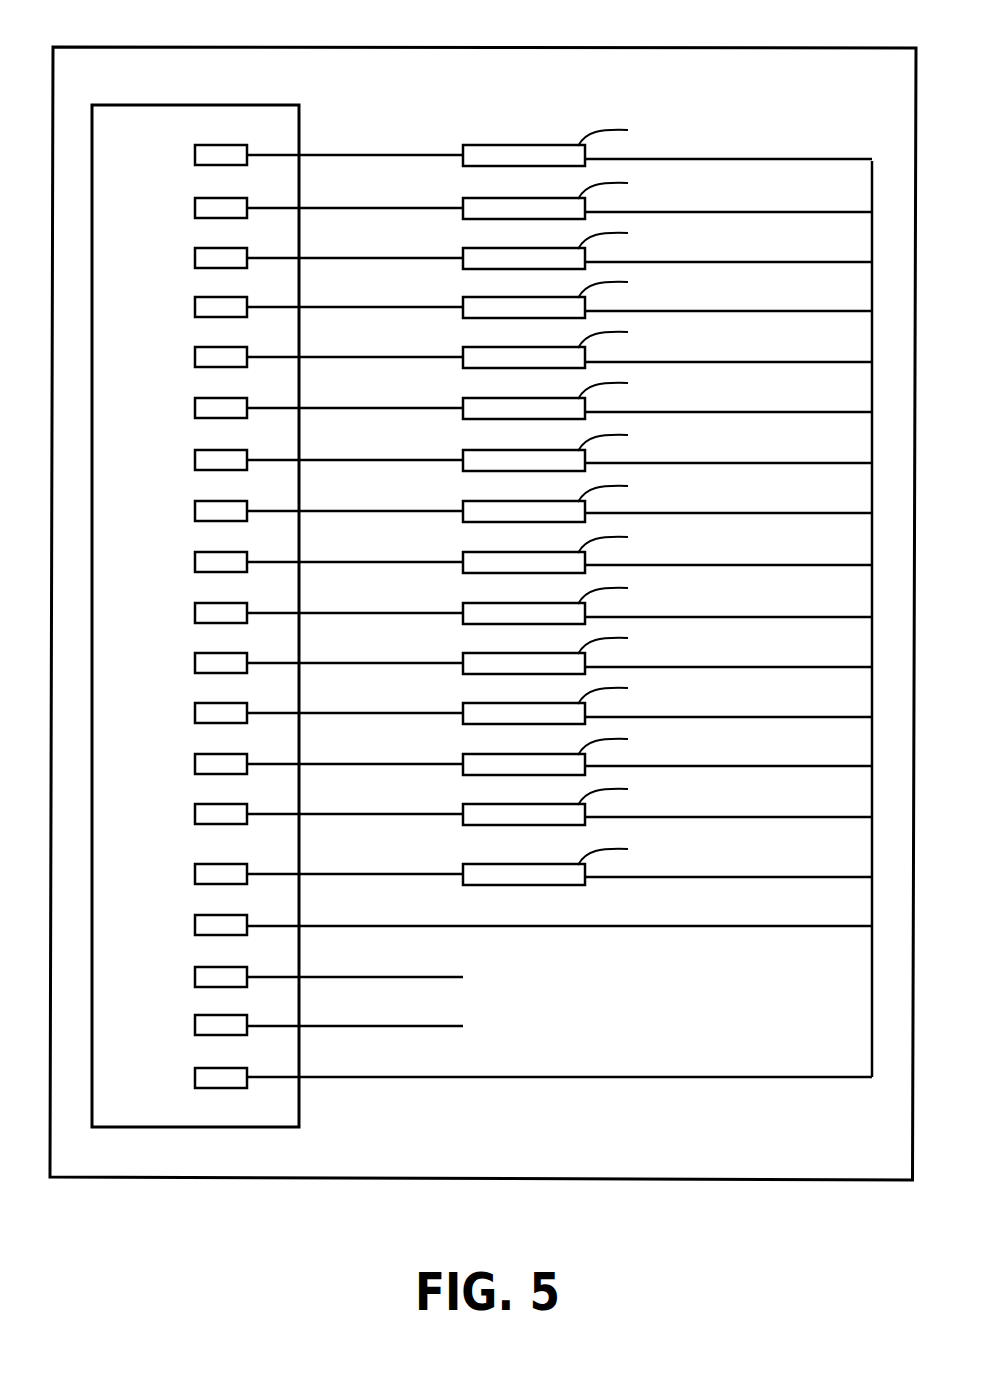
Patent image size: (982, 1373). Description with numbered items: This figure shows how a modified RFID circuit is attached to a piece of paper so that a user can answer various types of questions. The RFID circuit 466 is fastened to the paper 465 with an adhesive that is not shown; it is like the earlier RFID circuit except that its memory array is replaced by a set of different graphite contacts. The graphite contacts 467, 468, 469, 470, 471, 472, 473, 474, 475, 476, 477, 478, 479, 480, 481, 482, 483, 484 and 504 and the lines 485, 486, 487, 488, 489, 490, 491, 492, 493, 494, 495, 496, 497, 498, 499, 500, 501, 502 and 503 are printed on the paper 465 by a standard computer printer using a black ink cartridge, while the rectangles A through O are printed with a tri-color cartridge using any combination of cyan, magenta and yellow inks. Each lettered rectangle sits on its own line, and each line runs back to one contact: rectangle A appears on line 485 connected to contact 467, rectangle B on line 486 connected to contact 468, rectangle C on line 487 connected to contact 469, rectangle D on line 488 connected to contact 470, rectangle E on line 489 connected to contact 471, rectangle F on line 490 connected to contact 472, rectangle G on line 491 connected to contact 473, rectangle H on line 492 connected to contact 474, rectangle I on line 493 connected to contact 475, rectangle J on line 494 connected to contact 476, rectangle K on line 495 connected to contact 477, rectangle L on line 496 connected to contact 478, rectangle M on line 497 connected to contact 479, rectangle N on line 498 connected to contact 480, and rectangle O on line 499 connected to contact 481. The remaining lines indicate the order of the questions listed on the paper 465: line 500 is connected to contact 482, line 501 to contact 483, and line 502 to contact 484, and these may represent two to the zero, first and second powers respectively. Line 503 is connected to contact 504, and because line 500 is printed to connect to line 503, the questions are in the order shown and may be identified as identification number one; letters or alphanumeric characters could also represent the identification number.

The paper 465 is at (452, 46).
The RFID circuit 466 is at (245, 104).
The graphite contact 467 is at (196, 147).
The graphite contact 468 is at (196, 200).
The graphite contact 469 is at (196, 250).
The graphite contact 470 is at (196, 299).
The graphite contact 471 is at (196, 349).
The graphite contact 472 is at (196, 400).
The graphite contact 473 is at (196, 452).
The graphite contact 474 is at (196, 503).
The graphite contact 475 is at (196, 554).
The graphite contact 476 is at (196, 605).
The graphite contact 477 is at (196, 655).
The graphite contact 478 is at (196, 705).
The graphite contact 479 is at (196, 756).
The graphite contact 480 is at (196, 806).
The graphite contact 481 is at (196, 866).
The graphite contact 482 is at (196, 917).
The graphite contact 483 is at (196, 969).
The graphite contact 484 is at (196, 1017).
The graphite contact 504 is at (196, 1070).
The line 485 is at (403, 153).
The line 486 is at (403, 206).
The line 487 is at (403, 256).
The line 488 is at (403, 305).
The line 489 is at (403, 355).
The line 490 is at (403, 406).
The line 491 is at (403, 458).
The line 492 is at (403, 509).
The line 493 is at (403, 560).
The line 494 is at (403, 611).
The line 495 is at (403, 661).
The line 496 is at (403, 711).
The line 497 is at (403, 762).
The line 498 is at (403, 812).
The line 499 is at (403, 872).
The line 500 is at (403, 925).
The line 501 is at (403, 976).
The line 502 is at (403, 1025).
The line 503 is at (420, 1076).